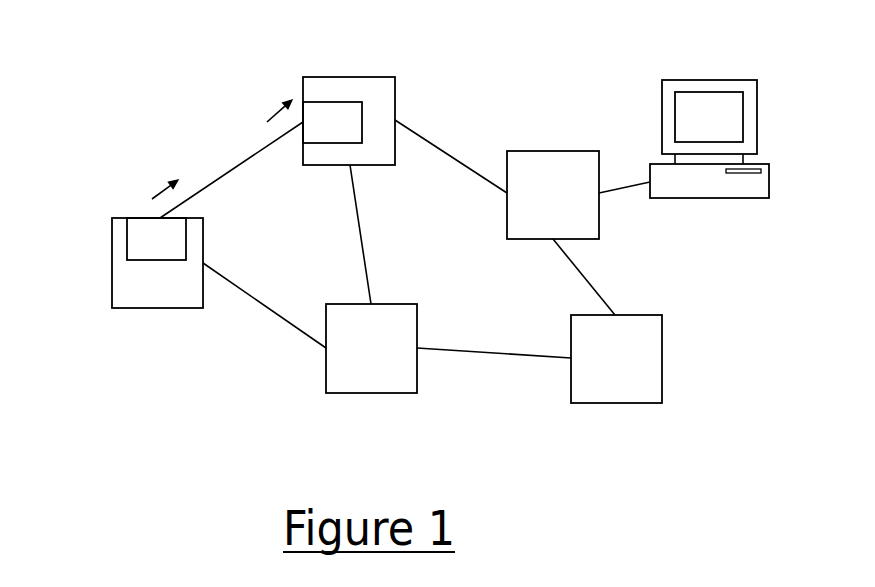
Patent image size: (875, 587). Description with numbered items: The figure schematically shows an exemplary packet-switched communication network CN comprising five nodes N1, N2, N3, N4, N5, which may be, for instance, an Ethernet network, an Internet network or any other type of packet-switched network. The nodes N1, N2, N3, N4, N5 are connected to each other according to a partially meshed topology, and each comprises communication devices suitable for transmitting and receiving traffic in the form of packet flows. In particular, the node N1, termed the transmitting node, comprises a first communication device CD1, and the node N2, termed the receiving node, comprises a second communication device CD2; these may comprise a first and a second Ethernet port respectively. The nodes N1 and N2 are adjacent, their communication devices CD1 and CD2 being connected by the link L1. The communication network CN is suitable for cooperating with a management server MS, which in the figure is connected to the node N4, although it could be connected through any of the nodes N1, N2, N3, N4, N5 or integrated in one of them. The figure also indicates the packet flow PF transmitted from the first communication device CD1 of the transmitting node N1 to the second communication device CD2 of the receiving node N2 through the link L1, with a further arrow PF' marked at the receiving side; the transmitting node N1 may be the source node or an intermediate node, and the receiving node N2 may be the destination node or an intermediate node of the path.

The packet-switched communication network CN is at (152, 81).
The transmitting node N1 is at (112, 262).
The receiving node N2 is at (351, 77).
The node N3 is at (373, 393).
The node N4 is at (552, 151).
The node N5 is at (617, 403).
The first communication device CD1 is at (156, 239).
The second communication device CD2 is at (332, 122).
The link L1 is at (228, 170).
The packet flow PF is at (148, 190).
The modified packet flow PF' is at (262, 109).
The management server MS is at (757, 117).